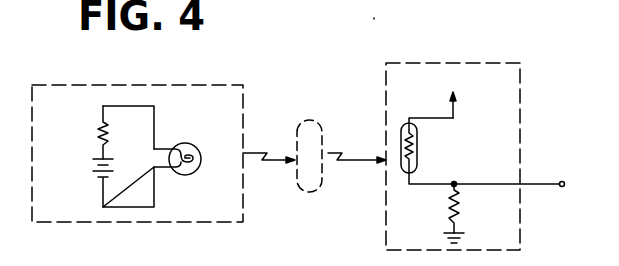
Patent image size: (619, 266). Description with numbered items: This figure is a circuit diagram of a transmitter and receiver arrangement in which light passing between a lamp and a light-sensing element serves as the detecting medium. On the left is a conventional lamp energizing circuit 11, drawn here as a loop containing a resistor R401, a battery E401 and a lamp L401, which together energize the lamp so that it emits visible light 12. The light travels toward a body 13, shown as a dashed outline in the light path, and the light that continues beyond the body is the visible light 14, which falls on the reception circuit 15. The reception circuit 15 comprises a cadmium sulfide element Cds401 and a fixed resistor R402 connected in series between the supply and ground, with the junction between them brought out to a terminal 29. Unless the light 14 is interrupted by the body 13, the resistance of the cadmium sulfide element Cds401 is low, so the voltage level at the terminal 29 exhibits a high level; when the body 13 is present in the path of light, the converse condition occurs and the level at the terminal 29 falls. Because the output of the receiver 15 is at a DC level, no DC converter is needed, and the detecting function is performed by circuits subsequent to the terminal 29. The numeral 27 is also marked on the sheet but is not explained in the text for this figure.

The lamp energizing circuit 11 is at (137, 137).
The visible light 12 is at (269, 144).
The body 13 is at (310, 141).
The visible light 14 is at (357, 144).
The reception circuit 15 is at (479, 141).
The connection 27 is at (374, 11).
The terminal 29 is at (558, 170).
The resistor R401 is at (78, 132).
The battery E401 is at (76, 183).
The lamp L401 is at (181, 147).
The cadmium sulfide element Cds401 is at (442, 148).
The fixed resistor R402 is at (478, 213).